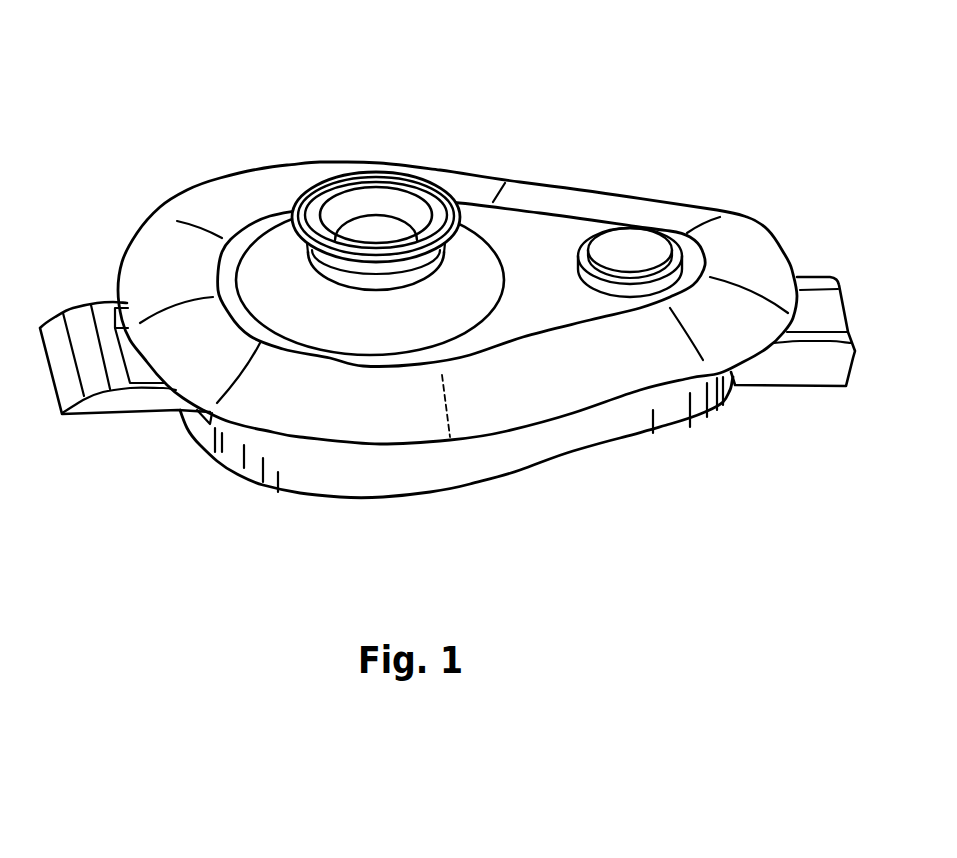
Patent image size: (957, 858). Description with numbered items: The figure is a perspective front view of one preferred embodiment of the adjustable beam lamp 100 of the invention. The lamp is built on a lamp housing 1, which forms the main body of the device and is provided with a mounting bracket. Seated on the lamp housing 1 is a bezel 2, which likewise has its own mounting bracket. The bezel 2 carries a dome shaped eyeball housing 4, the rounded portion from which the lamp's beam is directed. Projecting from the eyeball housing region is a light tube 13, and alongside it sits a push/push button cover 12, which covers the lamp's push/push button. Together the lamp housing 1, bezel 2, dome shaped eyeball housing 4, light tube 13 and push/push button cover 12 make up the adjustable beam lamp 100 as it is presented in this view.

The adjustable beam lamp 100 is at (640, 506).
The lamp housing 1 is at (278, 470).
The bezel 2 is at (545, 237).
The dome shaped eyeball housing 4 is at (263, 260).
The push/push button cover 12 is at (633, 250).
The light tube 13 is at (430, 177).